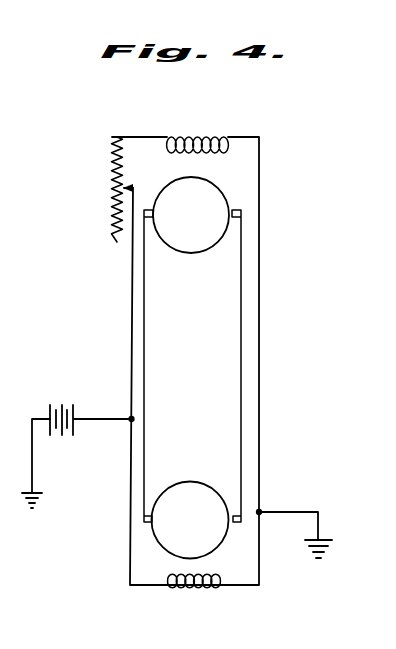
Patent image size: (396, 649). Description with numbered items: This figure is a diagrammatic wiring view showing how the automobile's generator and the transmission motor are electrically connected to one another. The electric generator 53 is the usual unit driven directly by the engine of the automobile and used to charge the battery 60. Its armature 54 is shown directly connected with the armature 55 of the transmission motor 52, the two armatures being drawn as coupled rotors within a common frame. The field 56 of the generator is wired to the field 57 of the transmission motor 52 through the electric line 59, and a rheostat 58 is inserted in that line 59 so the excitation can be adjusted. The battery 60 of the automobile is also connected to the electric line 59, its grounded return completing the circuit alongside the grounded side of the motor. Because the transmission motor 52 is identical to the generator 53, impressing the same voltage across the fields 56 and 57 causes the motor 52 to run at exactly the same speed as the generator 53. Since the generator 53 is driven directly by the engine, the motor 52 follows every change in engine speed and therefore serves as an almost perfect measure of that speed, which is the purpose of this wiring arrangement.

The transmission motor 52 is at (230, 555).
The electric generator 53 is at (232, 171).
The armature of the generator 54 is at (213, 205).
The armature of the transmission motor 55 is at (165, 540).
The field of the generator 56 is at (205, 137).
The field of the transmission motor 57 is at (198, 587).
The rheostat 58 is at (114, 187).
The line 59 is at (133, 322).
The battery 60 is at (59, 405).